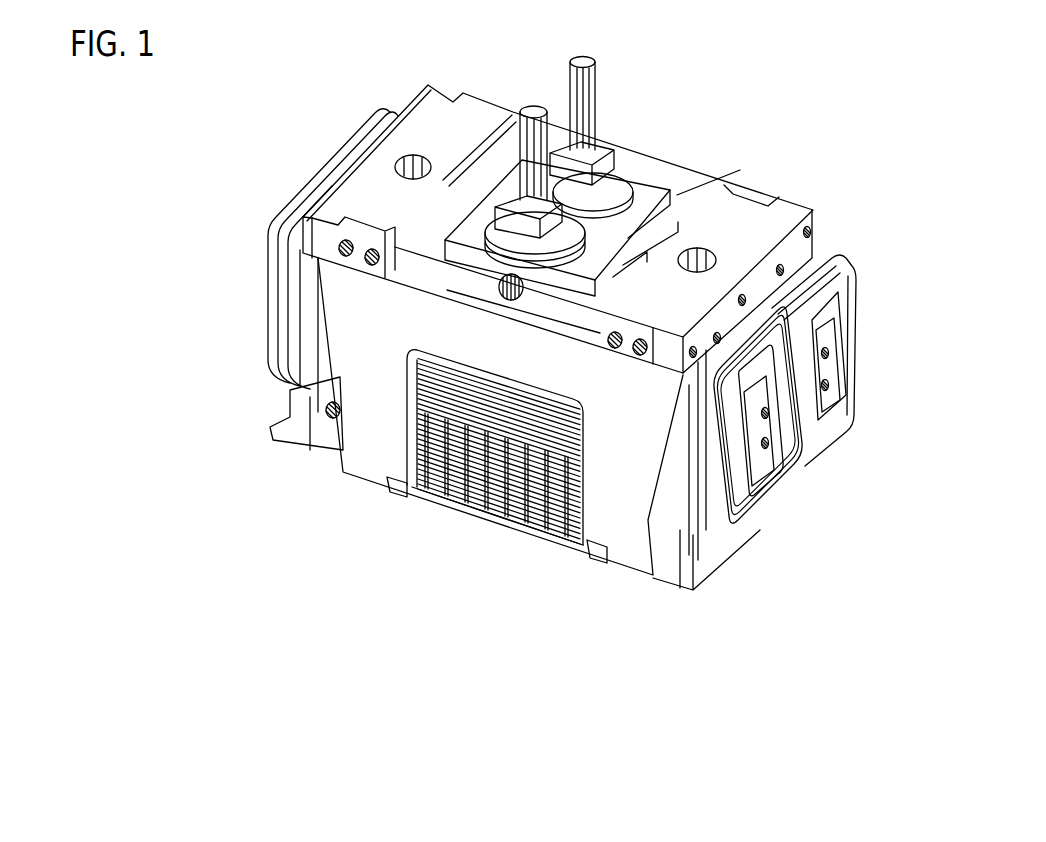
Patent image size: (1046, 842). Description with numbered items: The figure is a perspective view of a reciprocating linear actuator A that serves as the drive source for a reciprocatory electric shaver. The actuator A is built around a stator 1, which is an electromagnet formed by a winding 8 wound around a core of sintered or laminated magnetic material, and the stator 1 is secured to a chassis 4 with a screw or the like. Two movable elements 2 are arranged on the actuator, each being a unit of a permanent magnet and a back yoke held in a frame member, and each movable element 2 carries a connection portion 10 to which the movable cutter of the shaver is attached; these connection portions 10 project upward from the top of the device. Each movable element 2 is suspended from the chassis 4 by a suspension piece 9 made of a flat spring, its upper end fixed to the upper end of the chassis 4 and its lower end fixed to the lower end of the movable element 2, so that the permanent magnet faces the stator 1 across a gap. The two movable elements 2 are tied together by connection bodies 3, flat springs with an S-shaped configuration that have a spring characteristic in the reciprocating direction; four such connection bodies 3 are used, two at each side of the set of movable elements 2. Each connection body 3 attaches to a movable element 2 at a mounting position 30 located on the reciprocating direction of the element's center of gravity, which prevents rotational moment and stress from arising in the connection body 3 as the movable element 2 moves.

The stator 1 is at (575, 493).
The movable element 2 is at (466, 212).
The connection body 3 is at (282, 352).
The chassis 4 is at (372, 418).
The winding 8 is at (478, 505).
The suspension piece 9 is at (325, 368).
The connection portion 10 is at (517, 113).
The mounting position 30 is at (804, 458).
The reciprocating linear actuator A is at (493, 507).